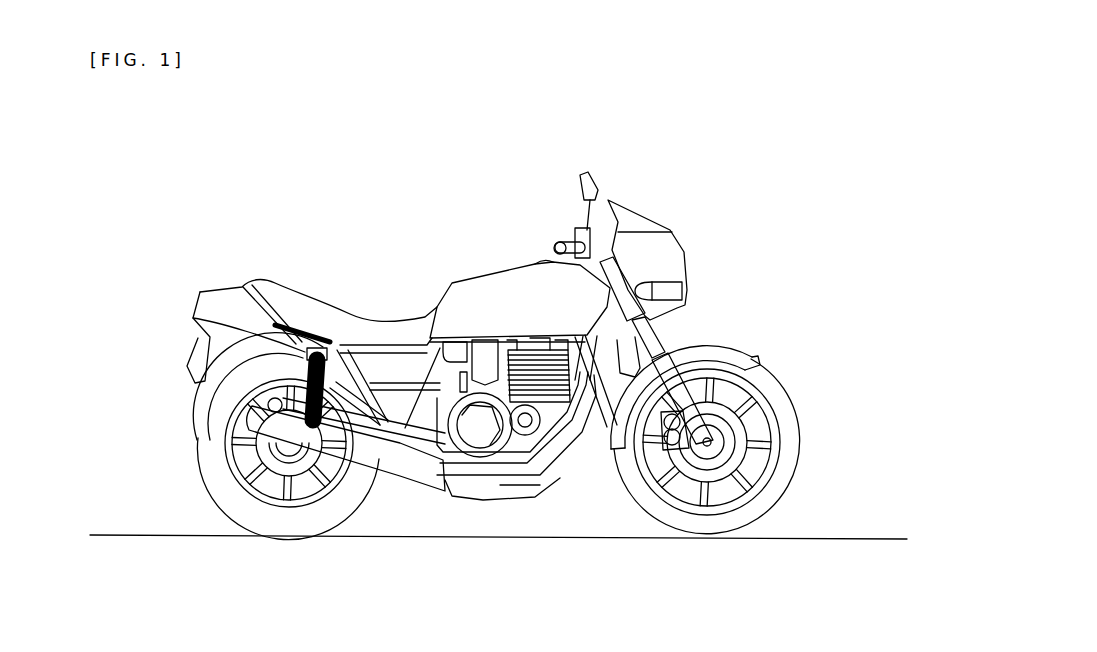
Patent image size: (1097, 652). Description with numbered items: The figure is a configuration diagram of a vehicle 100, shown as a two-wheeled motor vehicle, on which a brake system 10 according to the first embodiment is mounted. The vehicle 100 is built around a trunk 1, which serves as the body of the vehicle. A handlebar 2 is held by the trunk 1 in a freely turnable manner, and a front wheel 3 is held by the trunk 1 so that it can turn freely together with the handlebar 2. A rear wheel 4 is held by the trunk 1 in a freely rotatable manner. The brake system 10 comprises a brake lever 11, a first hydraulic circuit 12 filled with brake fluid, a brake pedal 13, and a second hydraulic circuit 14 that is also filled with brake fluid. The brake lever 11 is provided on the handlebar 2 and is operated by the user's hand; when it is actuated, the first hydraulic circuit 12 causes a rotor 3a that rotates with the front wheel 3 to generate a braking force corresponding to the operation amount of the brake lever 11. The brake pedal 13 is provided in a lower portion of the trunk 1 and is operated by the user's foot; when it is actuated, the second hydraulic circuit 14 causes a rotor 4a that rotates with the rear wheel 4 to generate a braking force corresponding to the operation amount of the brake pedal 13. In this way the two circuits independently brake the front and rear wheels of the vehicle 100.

The vehicle 100 is at (779, 141).
The brake system 10 is at (380, 215).
The trunk 1 is at (507, 298).
The handlebar 2 is at (558, 245).
The brake lever 11 is at (618, 250).
The first hydraulic circuit 12 is at (700, 320).
The front wheel 3 is at (733, 439).
The rotor 3a is at (765, 470).
The rear wheel 4 is at (249, 459).
The rotor 4a is at (260, 463).
The brake pedal 13 is at (445, 473).
The second hydraulic circuit 14 is at (372, 505).